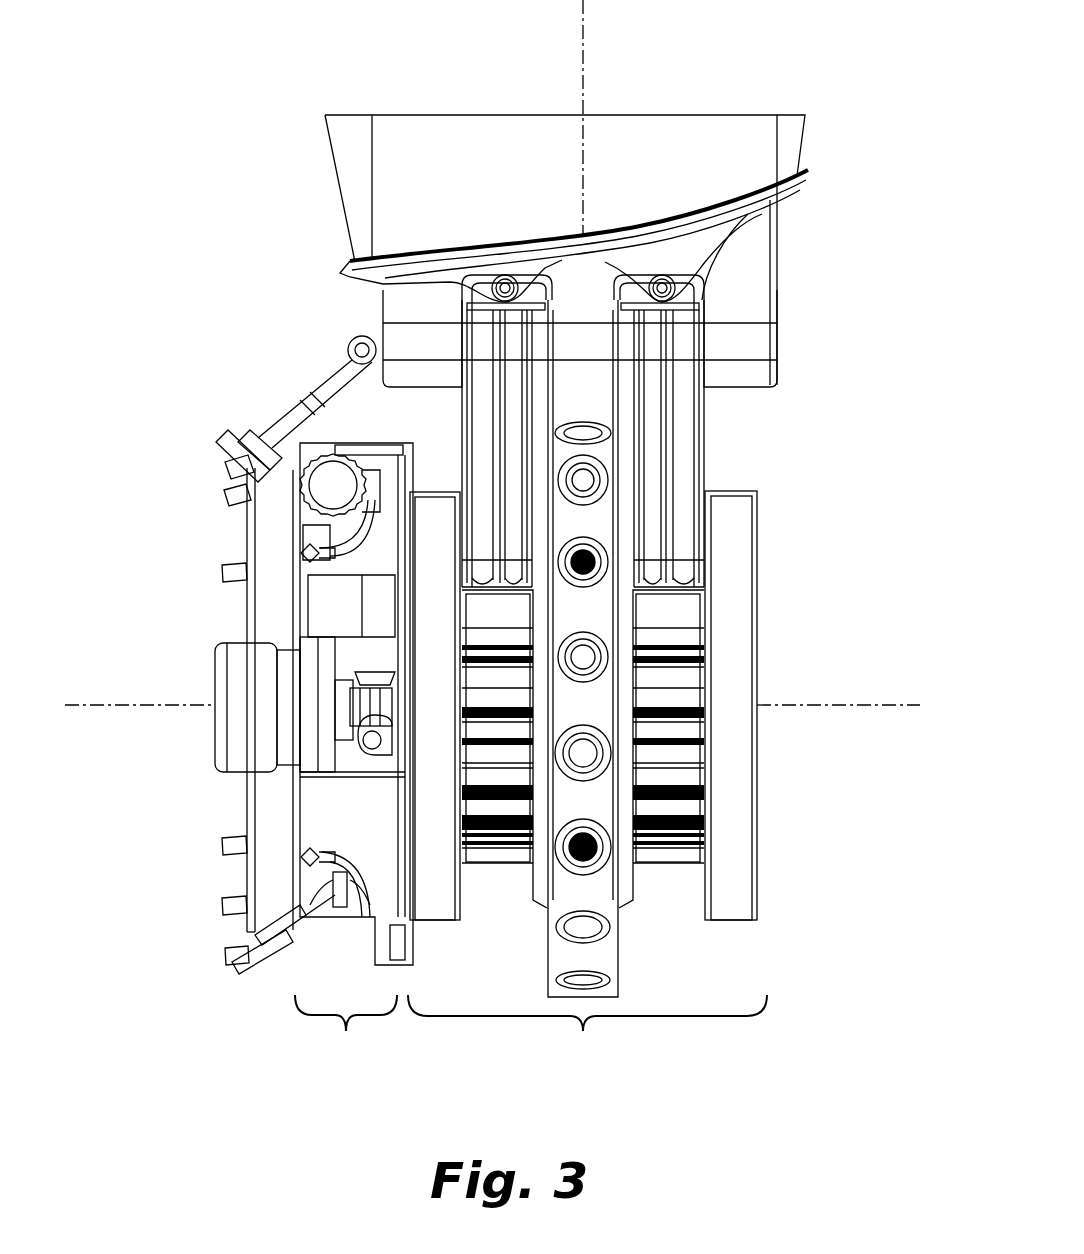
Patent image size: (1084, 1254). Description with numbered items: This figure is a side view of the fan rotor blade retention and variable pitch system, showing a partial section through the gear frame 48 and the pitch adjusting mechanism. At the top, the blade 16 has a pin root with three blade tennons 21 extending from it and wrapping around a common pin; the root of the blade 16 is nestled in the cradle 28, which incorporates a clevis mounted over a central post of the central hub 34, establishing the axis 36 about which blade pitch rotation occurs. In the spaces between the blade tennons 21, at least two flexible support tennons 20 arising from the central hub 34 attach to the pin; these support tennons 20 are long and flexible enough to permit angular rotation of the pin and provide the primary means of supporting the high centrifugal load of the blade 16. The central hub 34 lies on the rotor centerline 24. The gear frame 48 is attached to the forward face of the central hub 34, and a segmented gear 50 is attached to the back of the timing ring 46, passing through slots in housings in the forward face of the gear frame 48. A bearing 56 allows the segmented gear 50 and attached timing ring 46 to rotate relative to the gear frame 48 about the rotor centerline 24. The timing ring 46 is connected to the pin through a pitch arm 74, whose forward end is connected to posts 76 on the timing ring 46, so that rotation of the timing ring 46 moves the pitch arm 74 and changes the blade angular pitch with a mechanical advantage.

The blade 16 is at (335, 178).
The axis 36 is at (583, 65).
The cradle 28 is at (808, 172).
The blade tennons 21 is at (383, 310).
The pitch arm 74 is at (293, 390).
The posts 76 is at (230, 440).
The flexible support tennons 20 is at (465, 440).
The bearing 56 is at (301, 553).
The rotor centerline 24 is at (96, 705).
The timing ring 46 is at (247, 873).
The segmented gear 50 is at (335, 910).
The gear frame 48 is at (314, 767).
The central hub 34 is at (587, 698).